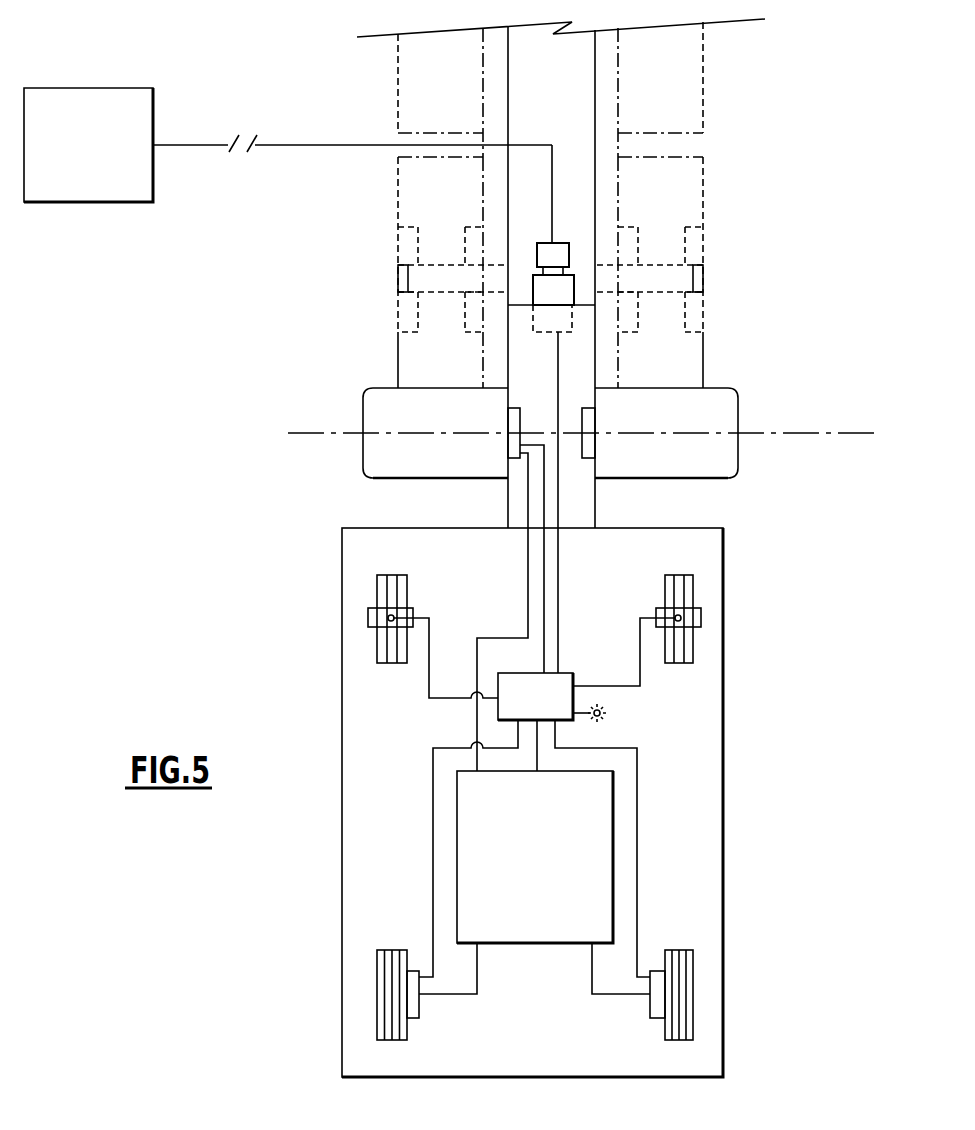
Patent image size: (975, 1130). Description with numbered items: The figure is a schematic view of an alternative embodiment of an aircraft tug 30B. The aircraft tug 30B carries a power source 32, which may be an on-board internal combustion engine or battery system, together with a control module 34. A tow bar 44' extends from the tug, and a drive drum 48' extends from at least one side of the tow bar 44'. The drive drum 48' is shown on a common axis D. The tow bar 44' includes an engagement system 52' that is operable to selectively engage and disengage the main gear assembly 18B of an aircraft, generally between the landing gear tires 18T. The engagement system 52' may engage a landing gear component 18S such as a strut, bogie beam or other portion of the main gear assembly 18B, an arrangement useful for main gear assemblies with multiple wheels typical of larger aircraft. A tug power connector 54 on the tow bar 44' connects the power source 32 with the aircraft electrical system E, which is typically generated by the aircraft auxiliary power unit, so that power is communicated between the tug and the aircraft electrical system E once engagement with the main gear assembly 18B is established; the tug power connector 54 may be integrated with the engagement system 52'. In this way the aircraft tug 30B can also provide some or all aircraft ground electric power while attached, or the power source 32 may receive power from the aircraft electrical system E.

The landing gear component 18S is at (568, 107).
The landing gear tires 18T is at (400, 200).
The main gear assembly 18B is at (558, 250).
The tug power connector 54 is at (553, 274).
The engagement system 52' is at (470, 349).
The drive drum 48' is at (571, 415).
The tow bar 44' is at (589, 589).
The aircraft tug 30B is at (792, 658).
The control module 34 is at (552, 712).
The power source 32 is at (550, 895).
The aircraft electrical system E is at (97, 162).
The axis of rotation D is at (848, 433).